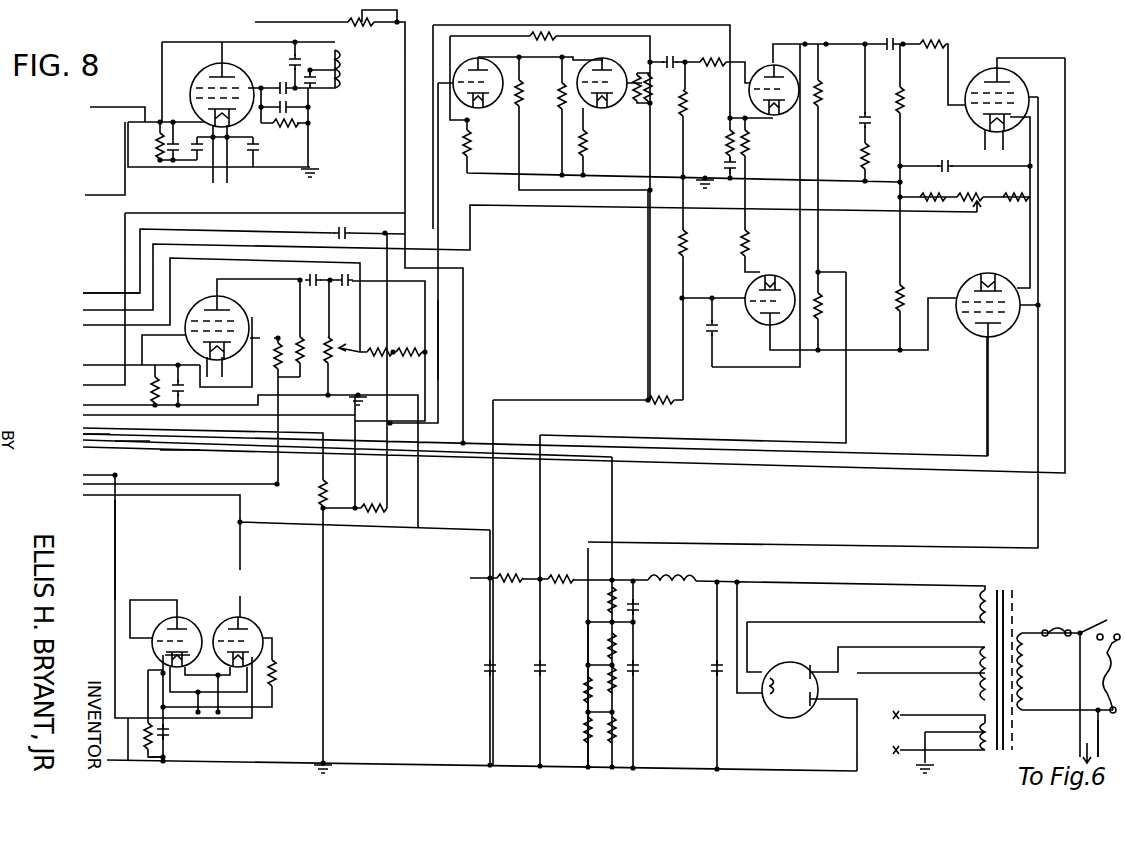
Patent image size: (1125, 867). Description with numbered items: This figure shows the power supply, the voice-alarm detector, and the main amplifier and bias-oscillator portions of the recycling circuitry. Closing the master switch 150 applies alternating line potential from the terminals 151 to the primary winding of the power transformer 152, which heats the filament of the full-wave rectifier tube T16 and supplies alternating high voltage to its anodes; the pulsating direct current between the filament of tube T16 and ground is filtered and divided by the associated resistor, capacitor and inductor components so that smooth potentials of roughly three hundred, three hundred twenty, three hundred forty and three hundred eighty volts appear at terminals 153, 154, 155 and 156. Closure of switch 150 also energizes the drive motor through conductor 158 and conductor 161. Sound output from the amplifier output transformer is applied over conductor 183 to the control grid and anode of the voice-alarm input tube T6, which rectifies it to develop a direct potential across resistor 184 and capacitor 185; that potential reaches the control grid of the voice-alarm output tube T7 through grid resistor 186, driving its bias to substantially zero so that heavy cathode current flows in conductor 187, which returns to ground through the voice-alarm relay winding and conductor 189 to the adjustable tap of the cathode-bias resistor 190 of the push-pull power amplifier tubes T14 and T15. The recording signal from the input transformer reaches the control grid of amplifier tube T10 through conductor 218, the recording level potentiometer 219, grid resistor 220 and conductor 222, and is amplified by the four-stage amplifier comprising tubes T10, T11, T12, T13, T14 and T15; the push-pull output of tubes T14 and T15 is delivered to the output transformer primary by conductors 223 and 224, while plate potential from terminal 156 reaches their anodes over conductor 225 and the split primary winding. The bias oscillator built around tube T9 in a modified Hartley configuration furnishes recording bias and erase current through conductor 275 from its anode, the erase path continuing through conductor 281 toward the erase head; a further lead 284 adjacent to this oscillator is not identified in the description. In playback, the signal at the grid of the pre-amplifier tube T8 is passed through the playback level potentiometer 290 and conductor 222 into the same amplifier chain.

The master switch 150 is at (1094, 630).
The terminals 151 is at (1108, 655).
The power transformer 152 is at (1003, 588).
The terminal 153 is at (588, 622).
The terminal 154 is at (480, 579).
The terminal 155 is at (542, 577).
The terminal 156 is at (614, 579).
The conductor 158 is at (1079, 670).
The conductor 161 is at (1095, 733).
The conductor 183 is at (110, 762).
The resistor 184 is at (166, 758).
The capacitor 185 is at (175, 735).
The grid resistor 186 is at (275, 672).
The conductor 187 is at (116, 532).
The conductor 189 is at (96, 300).
The cathode-bias resistor 190 is at (974, 185).
The conductor 218 is at (95, 414).
The recording level potentiometer 219 is at (318, 494).
The grid resistor 220 is at (371, 505).
The conductor 222 is at (440, 335).
The conductor 223 is at (95, 436).
The conductor 224 is at (186, 453).
The conductor 225 is at (136, 442).
The conductor 275 is at (126, 123).
The conductor 281 is at (100, 185).
The conductor 284 is at (105, 107).
The playback level potentiometer 290 is at (332, 342).
The voice-alarm input tube T6 is at (183, 618).
The voice alarm output tube T7 is at (258, 622).
The pre-amplifier tube T8 is at (203, 303).
The bias oscillator tube T9 is at (203, 76).
The amplifier tube T10 is at (475, 63).
The amplifier tube T11 is at (622, 108).
The amplifier tube T12 is at (760, 70).
The amplifier tube T13 is at (745, 292).
The push-pull power amplifier tube T14 is at (980, 68).
The push-pull power amplifier tube T15 is at (960, 284).
The full-wave rectifier tube T16 is at (808, 660).